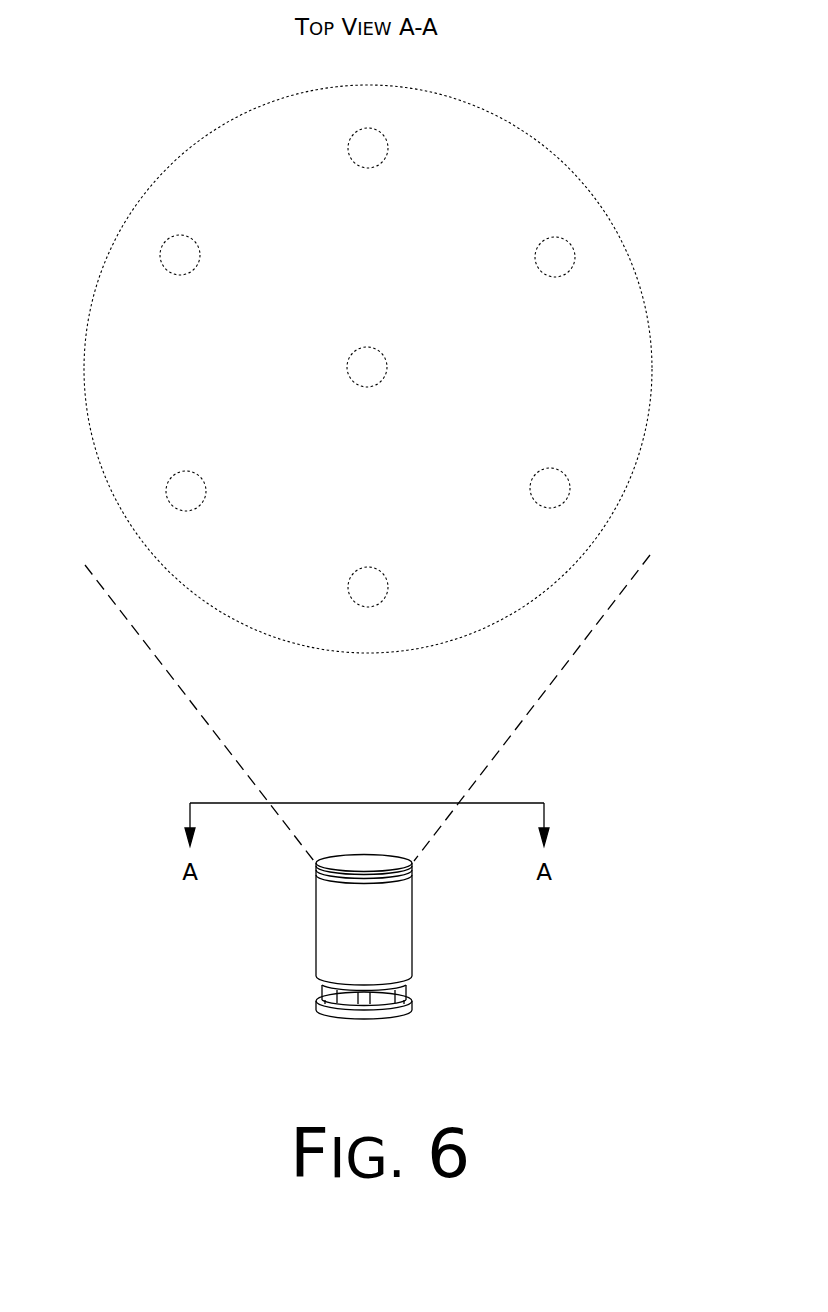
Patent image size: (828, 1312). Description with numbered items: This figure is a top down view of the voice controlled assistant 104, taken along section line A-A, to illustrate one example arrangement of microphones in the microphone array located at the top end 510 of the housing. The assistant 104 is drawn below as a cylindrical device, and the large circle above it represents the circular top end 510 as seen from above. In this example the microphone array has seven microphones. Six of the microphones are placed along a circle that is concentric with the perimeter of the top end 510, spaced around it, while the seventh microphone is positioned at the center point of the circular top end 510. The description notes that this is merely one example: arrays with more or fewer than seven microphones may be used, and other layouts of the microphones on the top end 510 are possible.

The top end 510 is at (525, 168).
The voice controlled assistant 104 is at (411, 1011).